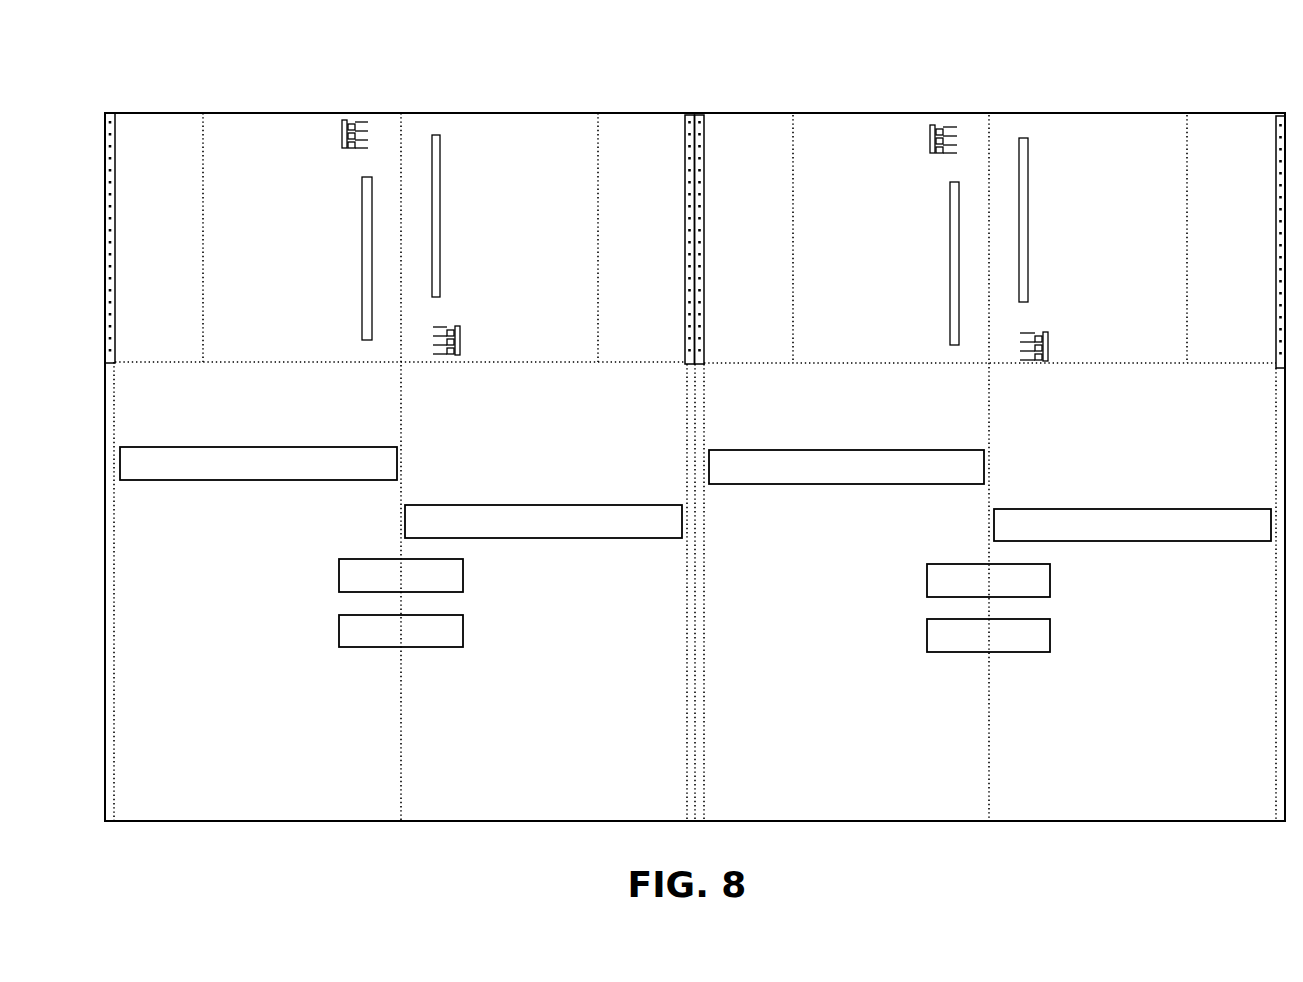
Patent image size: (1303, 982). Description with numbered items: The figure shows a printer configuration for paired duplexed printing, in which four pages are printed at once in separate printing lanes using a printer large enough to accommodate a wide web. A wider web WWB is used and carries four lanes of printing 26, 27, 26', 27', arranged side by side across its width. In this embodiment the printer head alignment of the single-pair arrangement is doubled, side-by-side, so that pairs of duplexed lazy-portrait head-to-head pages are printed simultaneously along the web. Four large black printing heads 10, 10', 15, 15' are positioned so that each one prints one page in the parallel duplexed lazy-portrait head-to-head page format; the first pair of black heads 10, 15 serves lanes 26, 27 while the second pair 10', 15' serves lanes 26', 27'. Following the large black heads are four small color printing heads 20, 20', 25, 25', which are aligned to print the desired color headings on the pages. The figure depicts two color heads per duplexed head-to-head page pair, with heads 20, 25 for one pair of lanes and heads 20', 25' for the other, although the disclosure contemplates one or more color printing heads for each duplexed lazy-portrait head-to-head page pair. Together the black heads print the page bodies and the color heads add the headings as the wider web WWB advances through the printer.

The large black printing head 10 is at (258, 437).
The large black printing head 15 is at (543, 498).
The small color printing head 20 is at (376, 553).
The small color printing head 25 is at (426, 653).
The large black printing head 10' is at (846, 441).
The large black printing head 15' is at (1132, 502).
The small color printing head 20' is at (958, 559).
The small color printing head 25' is at (1015, 657).
The lane of printing 26 is at (253, 212).
The lane of printing 27 is at (548, 212).
The lane of printing 26' is at (842, 212).
The lane of printing 27' is at (1136, 212).
The wider web WWB is at (293, 172).